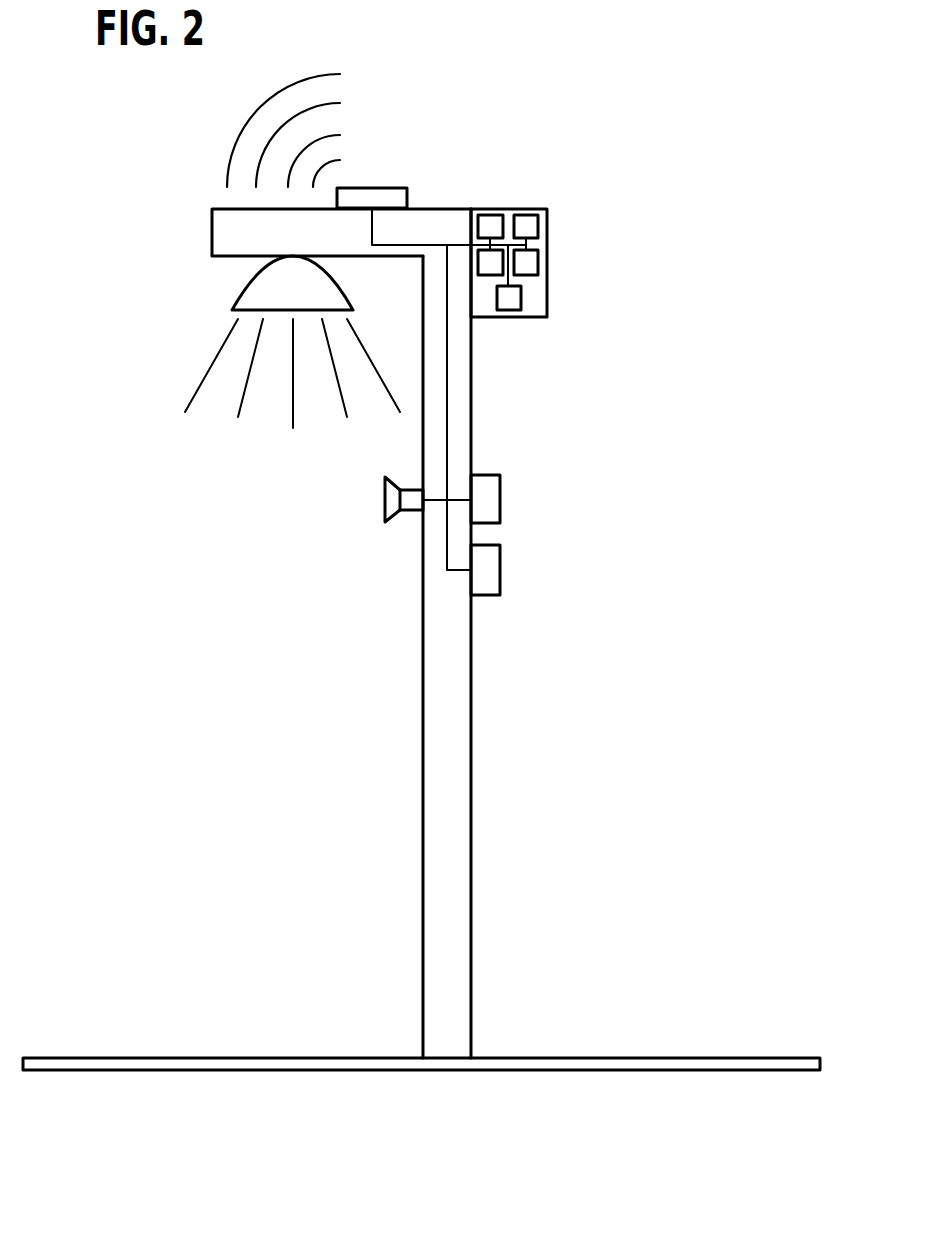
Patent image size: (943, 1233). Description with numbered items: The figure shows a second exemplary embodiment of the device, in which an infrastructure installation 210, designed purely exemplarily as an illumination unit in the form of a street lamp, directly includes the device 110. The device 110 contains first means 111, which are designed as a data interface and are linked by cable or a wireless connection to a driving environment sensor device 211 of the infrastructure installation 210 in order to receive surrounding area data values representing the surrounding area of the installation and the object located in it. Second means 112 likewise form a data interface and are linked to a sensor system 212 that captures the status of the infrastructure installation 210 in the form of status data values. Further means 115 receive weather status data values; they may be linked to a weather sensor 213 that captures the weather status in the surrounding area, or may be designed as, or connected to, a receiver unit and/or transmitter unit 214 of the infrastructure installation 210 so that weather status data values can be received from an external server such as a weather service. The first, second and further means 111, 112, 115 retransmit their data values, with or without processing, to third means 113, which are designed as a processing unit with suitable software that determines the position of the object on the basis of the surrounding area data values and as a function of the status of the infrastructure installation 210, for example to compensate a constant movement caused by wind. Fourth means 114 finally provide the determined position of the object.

The device 110 is at (547, 275).
The first means 111 is at (490, 213).
The second means 112 is at (538, 227).
The third means 113 is at (538, 262).
The fourth means 114 is at (492, 275).
The further means 115 is at (521, 298).
The infrastructure installation 210 is at (471, 876).
The driving environment sensor device 211 is at (385, 497).
The sensor system 212 is at (500, 498).
The weather sensor 213 is at (500, 568).
The receiver unit and/or transmitter unit 214 is at (372, 188).